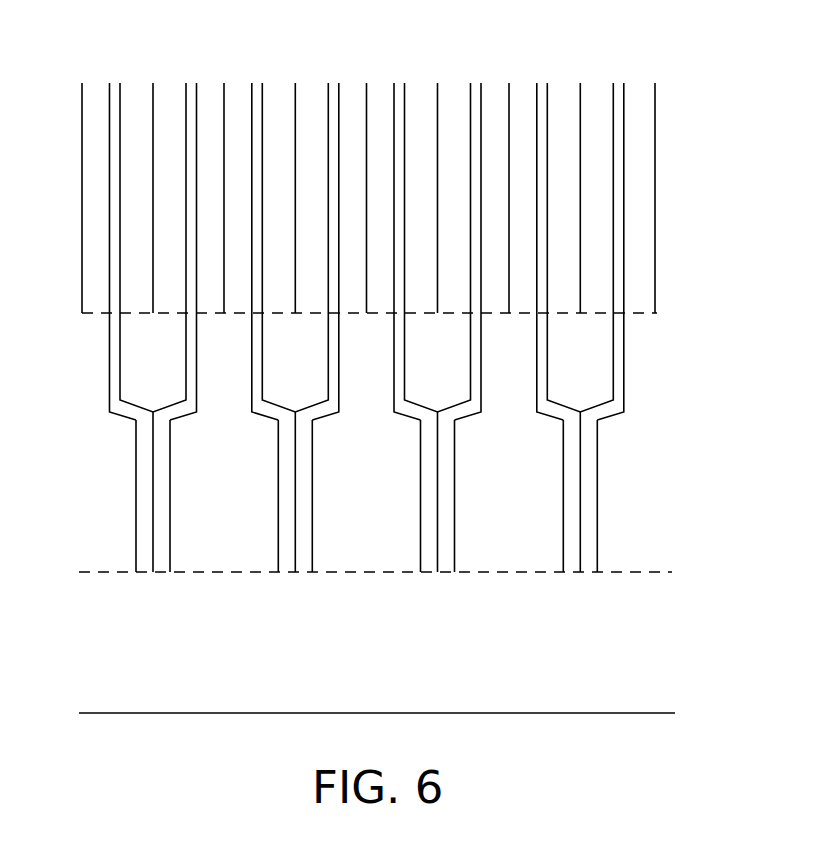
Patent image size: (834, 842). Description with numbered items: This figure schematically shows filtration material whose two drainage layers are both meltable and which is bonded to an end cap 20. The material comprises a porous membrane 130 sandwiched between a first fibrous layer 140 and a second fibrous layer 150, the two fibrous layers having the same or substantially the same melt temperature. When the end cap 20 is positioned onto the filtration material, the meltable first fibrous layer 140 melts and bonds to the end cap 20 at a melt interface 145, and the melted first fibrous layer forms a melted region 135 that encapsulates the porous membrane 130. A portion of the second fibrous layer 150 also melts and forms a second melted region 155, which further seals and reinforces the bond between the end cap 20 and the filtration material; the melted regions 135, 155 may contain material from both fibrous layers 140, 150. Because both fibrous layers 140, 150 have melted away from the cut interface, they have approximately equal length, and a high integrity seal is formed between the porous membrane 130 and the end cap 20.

The end cap 20 is at (603, 664).
The porous membrane 130 is at (137, 465).
The melted region 135 is at (364, 473).
The first fibrous layer 140 is at (242, 98).
The melt interface 145 is at (687, 571).
The second fibrous layer 150 is at (170, 102).
The second melted region 155 is at (152, 359).